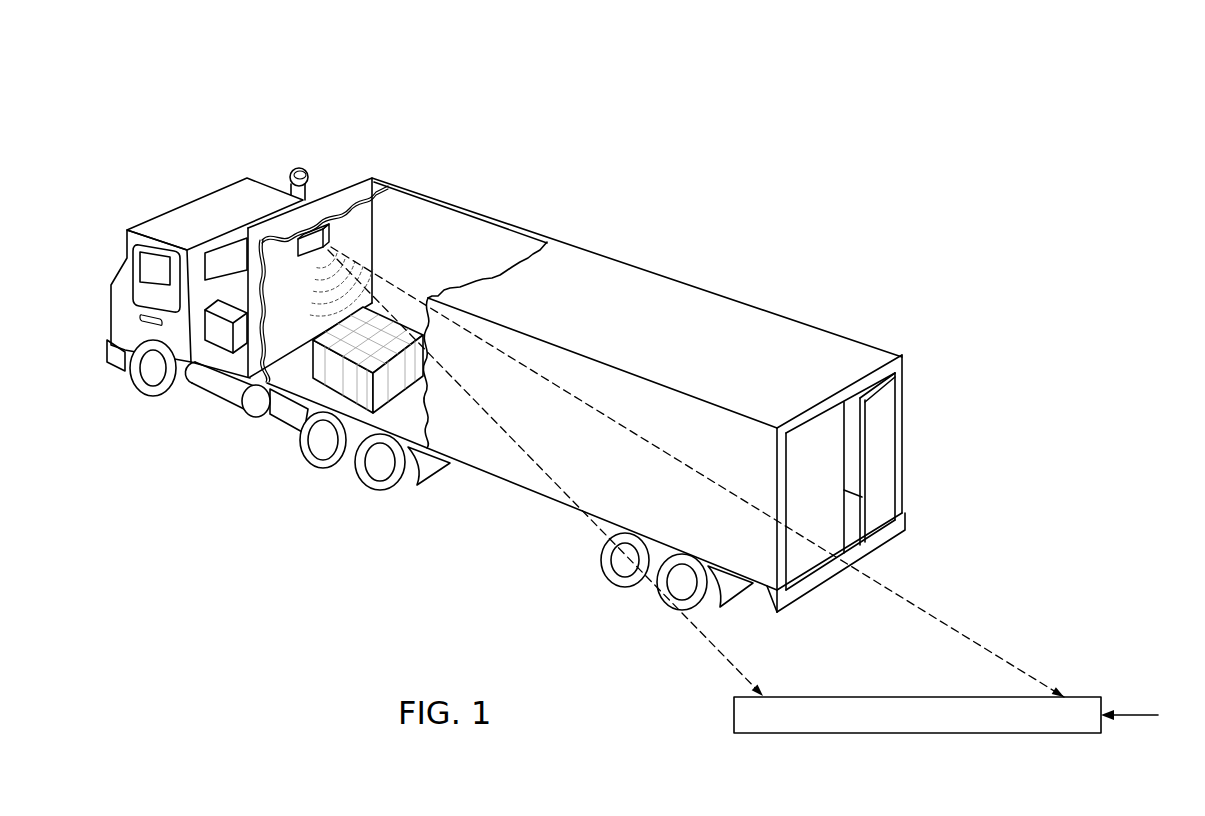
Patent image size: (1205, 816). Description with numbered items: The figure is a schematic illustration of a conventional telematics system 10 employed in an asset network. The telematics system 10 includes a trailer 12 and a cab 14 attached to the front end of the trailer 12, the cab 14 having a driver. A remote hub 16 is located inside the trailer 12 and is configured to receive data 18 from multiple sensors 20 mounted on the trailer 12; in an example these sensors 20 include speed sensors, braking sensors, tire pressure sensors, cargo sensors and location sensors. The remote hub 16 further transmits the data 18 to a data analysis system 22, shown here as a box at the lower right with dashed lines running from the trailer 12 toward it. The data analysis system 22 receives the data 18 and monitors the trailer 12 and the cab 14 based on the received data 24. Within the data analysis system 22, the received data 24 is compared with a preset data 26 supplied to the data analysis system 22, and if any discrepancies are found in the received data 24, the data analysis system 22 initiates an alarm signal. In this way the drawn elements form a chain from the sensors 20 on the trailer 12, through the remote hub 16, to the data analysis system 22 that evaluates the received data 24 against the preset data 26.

The telematics system 10 is at (226, 62).
The trailer 12 is at (692, 305).
The cab 14 is at (120, 278).
The remote hub 16 is at (310, 257).
The data 18 is at (334, 233).
The sensors 20 is at (382, 468).
The data analysis system 22 is at (1084, 697).
The received data 24 is at (768, 697).
The preset data 26 is at (1140, 712).